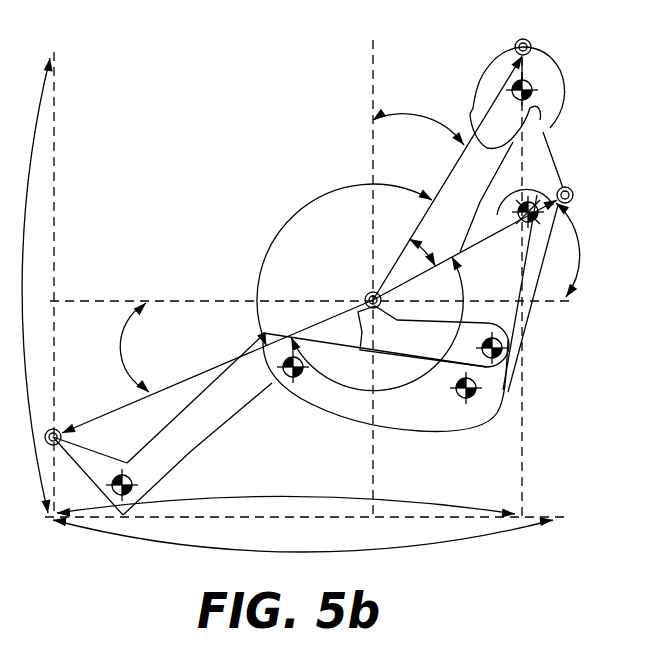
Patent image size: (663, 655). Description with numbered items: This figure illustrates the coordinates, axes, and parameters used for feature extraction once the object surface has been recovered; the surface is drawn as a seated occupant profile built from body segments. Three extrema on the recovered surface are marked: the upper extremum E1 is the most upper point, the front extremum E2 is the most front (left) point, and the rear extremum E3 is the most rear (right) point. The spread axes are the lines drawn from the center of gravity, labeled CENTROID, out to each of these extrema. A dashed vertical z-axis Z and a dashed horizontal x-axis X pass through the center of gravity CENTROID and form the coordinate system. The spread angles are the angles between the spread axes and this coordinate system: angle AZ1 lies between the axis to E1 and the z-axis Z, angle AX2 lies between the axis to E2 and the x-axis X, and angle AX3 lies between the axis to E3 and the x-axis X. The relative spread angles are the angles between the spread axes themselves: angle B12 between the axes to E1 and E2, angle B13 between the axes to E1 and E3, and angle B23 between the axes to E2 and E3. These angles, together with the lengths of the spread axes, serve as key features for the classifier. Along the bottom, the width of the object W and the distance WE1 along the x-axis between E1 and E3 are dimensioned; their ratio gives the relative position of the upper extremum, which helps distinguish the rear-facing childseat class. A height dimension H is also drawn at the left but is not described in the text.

The upper extremum E1 is at (466, 161).
The front extremum E2 is at (486, 233).
The rear extremum E3 is at (205, 372).
The center of gravity CENTROID is at (320, 288).
The z-axis Z is at (382, 272).
The x-axis X is at (317, 317).
The height dimension H is at (37, 285).
The width of the object W is at (303, 535).
The distance along the x-axis between E1 and E3 WE1 is at (286, 485).
The relative spread angle β13 B13 is at (328, 265).
The relative spread angle β23 B23 is at (377, 340).
The relative spread angle β12 B12 is at (435, 238).
The spread angle αZ1 AZ1 is at (418, 109).
The spread angle αX2 AX2 is at (592, 250).
The spread angle αX3 AX3 is at (110, 347).